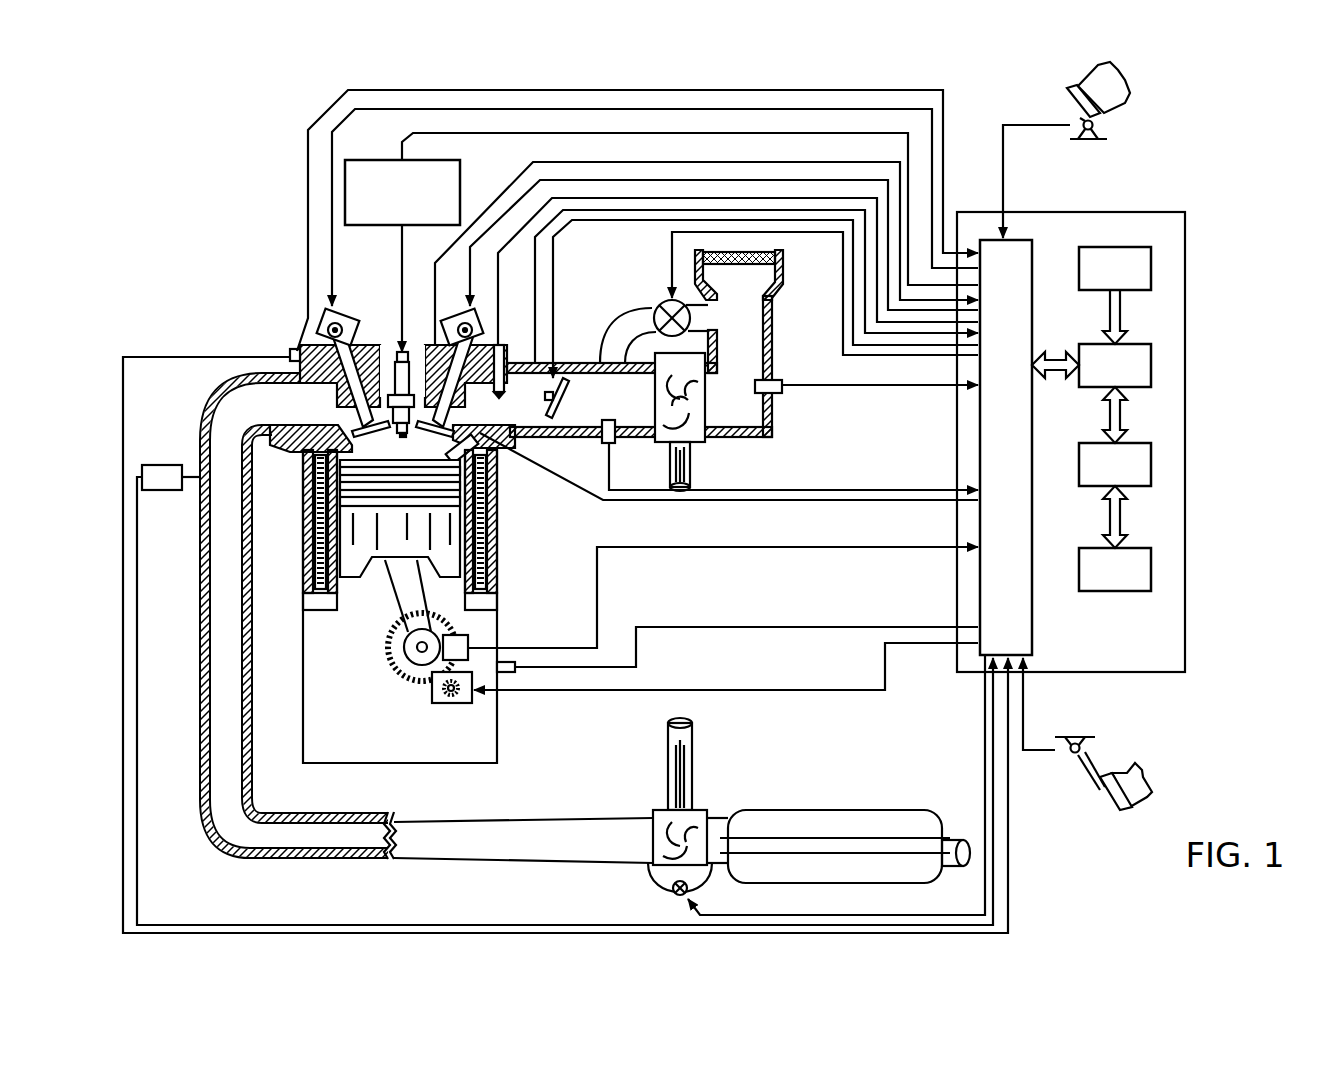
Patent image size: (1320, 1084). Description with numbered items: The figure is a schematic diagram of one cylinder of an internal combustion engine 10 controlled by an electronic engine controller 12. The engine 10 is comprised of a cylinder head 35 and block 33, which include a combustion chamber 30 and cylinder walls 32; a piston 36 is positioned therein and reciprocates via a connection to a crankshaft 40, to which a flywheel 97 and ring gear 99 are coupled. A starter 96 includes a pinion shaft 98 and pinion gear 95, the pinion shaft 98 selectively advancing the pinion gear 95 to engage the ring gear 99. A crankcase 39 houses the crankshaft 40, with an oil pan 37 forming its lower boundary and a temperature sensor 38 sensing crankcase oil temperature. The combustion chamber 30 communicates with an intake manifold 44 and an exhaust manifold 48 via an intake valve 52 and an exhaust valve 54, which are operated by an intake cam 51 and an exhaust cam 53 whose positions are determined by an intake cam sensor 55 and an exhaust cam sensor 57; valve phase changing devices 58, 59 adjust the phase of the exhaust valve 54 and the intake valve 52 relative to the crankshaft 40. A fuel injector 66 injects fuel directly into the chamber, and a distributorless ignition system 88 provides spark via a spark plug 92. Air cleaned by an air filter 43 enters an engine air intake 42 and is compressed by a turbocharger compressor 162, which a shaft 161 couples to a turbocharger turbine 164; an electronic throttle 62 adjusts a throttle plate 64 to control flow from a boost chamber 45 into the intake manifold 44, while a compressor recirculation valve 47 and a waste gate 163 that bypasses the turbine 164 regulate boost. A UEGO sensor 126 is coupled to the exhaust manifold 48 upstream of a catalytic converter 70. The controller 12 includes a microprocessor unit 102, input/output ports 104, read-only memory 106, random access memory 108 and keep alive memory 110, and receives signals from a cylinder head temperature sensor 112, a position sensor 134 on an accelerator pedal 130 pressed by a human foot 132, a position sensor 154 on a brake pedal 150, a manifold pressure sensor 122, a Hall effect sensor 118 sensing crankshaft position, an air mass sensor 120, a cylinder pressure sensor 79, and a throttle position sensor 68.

The internal combustion engine 10 is at (236, 297).
The electronic engine controller 12 is at (1185, 215).
The combustion chamber 30 is at (400, 445).
The cylinder walls 32 is at (345, 592).
The block 33 is at (297, 486).
The cylinder head 35 is at (296, 342).
The piston 36 is at (385, 562).
The oil pan 37 is at (497, 745).
The temperature sensor 38 is at (515, 669).
The crankcase 39 is at (316, 690).
The crankshaft 40 is at (404, 670).
The engine air intake 42 is at (612, 266).
The air filter 43 is at (760, 266).
The intake manifold 44 is at (531, 414).
The boost chamber 45 is at (629, 414).
The compressor recirculation valve 47 is at (658, 304).
The exhaust manifold 48 is at (280, 418).
The intake cam 51 is at (460, 310).
The intake valve 52 is at (440, 410).
The exhaust cam 53 is at (345, 312).
The exhaust valve 54 is at (362, 425).
The intake cam sensor 55 is at (484, 335).
The exhaust cam sensor 57 is at (323, 325).
The valve phase changing device 58 is at (348, 330).
The valve phase changing device 59 is at (478, 322).
The electronic throttle 62 is at (562, 400).
The throttle plate 64 is at (558, 417).
The fuel injector 66 is at (712, 466).
The throttle position sensor 68 is at (505, 372).
The catalytic converter 70 is at (770, 810).
The cylinder pressure sensor 79 is at (414, 368).
The distributorless ignition system 88 is at (356, 160).
The spark plug 92 is at (392, 352).
The pinion gear 95 is at (460, 703).
The starter 96 is at (466, 703).
The flywheel 97 is at (393, 650).
The pinion shaft 98 is at (443, 696).
The ring gear 99 is at (413, 680).
The microprocessor unit 102 is at (1152, 368).
The input/output ports 104 is at (1035, 245).
The read-only memory 106 is at (1152, 268).
The random access memory 108 is at (1152, 468).
The keep alive memory 110 is at (1152, 572).
The temperature sensor 112 is at (290, 355).
The Hall effect sensor 118 is at (468, 638).
The air mass sensor 120 is at (782, 380).
The pressure sensor 122 is at (603, 443).
The Universal Exhaust Gas Oxygen sensor 126 is at (165, 465).
The accelerator pedal 130 is at (1068, 108).
The human foot 132 is at (1120, 90).
The position sensor 134 is at (1108, 125).
The brake pedal 150 is at (1097, 797).
The position sensor 154 is at (1063, 748).
The shaft 161 is at (670, 468).
The turbocharger compressor 162 is at (700, 441).
The waste gate 163 is at (672, 895).
The turbocharger turbine 164 is at (660, 810).